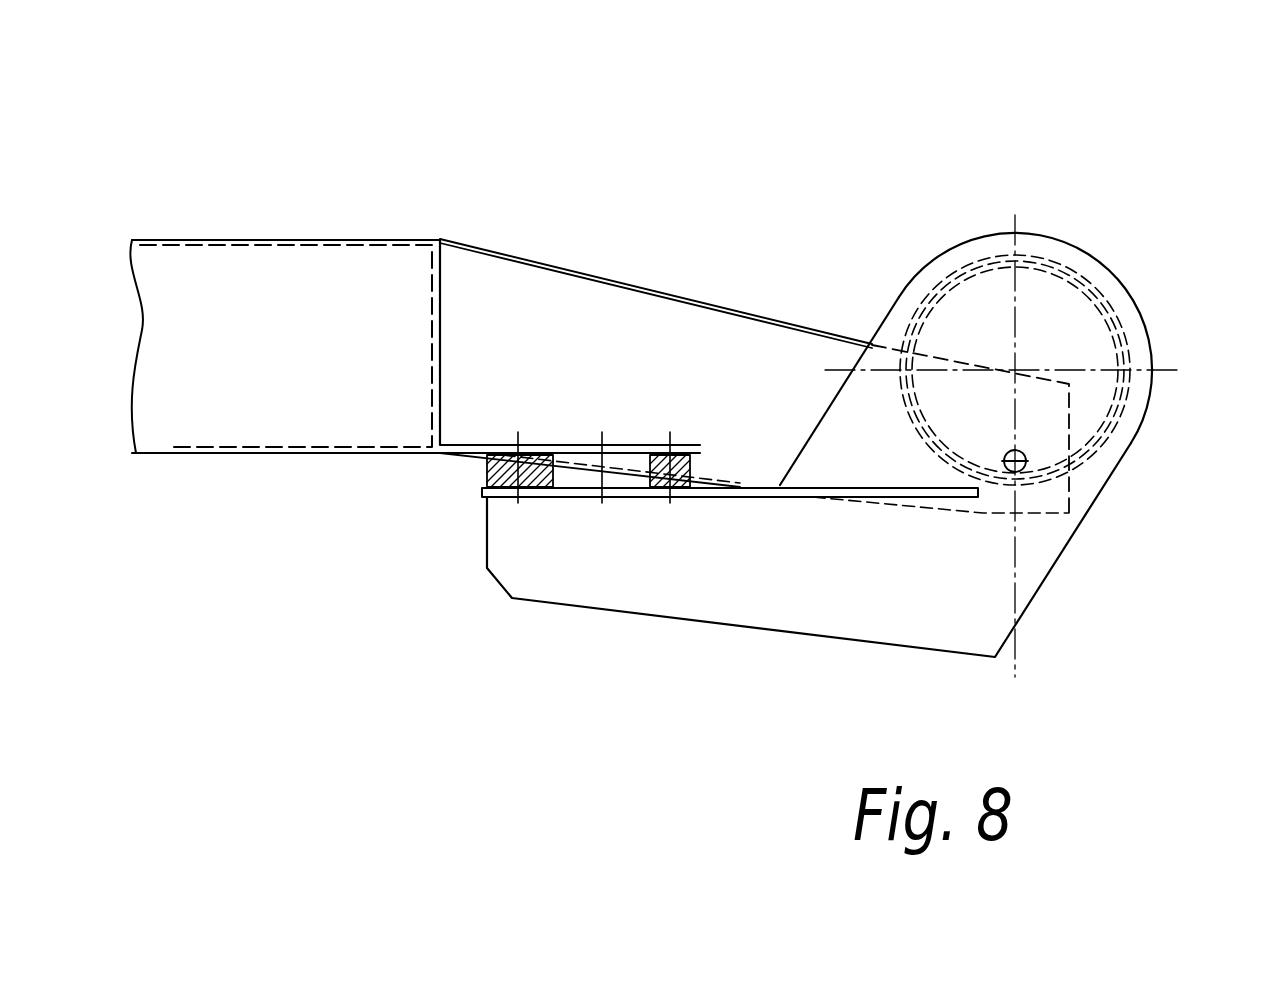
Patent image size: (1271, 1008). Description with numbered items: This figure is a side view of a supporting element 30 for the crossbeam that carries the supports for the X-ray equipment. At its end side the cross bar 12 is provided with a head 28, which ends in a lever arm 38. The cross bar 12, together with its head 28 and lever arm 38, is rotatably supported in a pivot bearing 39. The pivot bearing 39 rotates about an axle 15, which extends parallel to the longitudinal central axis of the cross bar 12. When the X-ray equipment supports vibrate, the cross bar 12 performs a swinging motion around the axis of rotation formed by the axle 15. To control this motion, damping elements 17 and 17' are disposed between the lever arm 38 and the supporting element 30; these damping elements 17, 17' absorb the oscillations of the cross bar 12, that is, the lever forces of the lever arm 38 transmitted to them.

The cross bar 12 is at (1092, 292).
The axle 15 is at (1012, 448).
The damping element 17 is at (689, 517).
The damping element 17' is at (588, 566).
The head 28 is at (1137, 418).
The supporting element 30 is at (628, 318).
The lever arm 38 is at (763, 607).
The pivot bearing 39 is at (1033, 473).